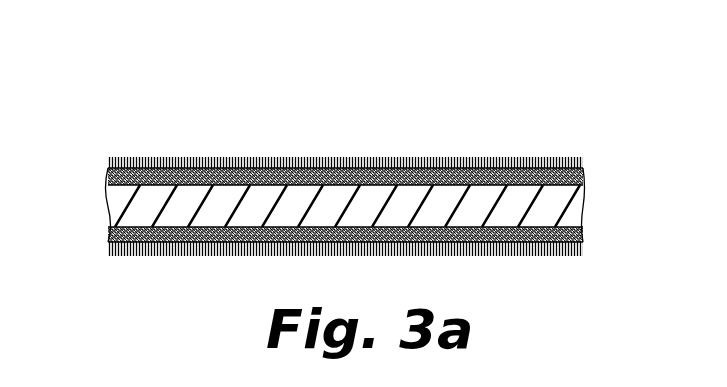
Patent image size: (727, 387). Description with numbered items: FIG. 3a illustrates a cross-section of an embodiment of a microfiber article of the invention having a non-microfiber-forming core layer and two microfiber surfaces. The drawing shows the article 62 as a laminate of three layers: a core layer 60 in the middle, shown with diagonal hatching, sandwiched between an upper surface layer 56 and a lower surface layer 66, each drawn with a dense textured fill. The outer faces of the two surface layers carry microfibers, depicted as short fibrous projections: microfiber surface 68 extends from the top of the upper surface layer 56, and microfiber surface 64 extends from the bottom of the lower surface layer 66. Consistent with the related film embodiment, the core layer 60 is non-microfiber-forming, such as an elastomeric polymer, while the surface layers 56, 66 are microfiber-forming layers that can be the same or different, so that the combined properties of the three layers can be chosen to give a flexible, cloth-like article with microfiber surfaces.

The laminate structure 62 is at (520, 157).
The first fabric layer 56 is at (106, 172).
The core layer 60 is at (118, 207).
The second fabric layer 66 is at (106, 234).
The pile fibers of first layer 68 is at (441, 157).
The pile fibers of second layer 64 is at (247, 256).